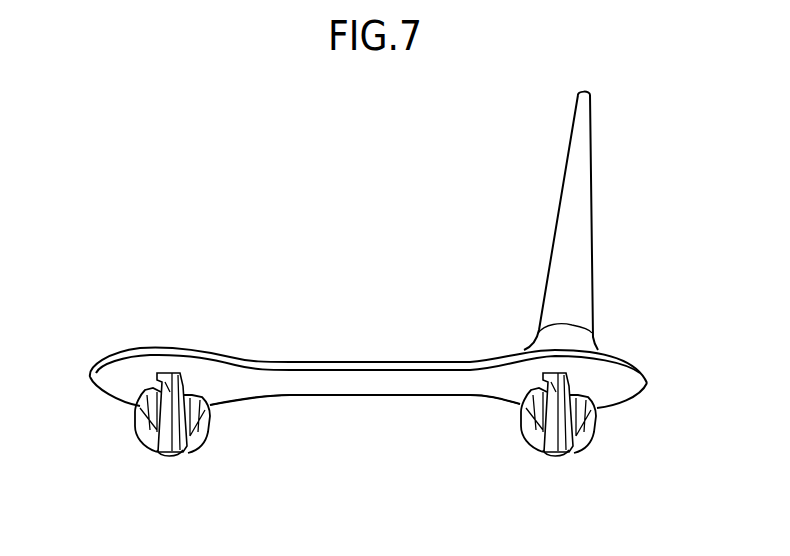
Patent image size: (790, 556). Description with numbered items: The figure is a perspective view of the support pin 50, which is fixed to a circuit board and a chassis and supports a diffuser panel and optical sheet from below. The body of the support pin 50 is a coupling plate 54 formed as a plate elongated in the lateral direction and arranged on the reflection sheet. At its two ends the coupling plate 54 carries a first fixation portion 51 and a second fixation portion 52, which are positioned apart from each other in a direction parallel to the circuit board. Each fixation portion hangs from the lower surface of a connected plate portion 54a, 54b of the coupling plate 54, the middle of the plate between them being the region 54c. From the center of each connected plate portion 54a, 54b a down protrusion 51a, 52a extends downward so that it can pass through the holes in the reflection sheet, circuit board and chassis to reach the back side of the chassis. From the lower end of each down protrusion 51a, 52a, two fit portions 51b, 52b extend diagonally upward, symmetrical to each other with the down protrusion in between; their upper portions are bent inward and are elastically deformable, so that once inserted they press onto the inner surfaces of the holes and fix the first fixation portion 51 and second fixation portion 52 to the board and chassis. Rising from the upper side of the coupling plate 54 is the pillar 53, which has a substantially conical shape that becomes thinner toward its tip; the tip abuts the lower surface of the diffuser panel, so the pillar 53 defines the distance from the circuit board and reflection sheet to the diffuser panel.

The support pin 50 is at (380, 186).
The first fixation portion 51 is at (556, 465).
The down protrusion 51a is at (570, 432).
The fit portion 51b is at (530, 440).
The second fixation portion 52 is at (165, 465).
The down protrusion 52a is at (138, 402).
The fit portion 52b is at (137, 433).
The pillar 53 is at (578, 220).
The coupling plate 54 is at (490, 485).
The connected plate portion 54a is at (510, 383).
The connected plate portion 54b is at (212, 405).
The plate portion central part 54c is at (372, 382).